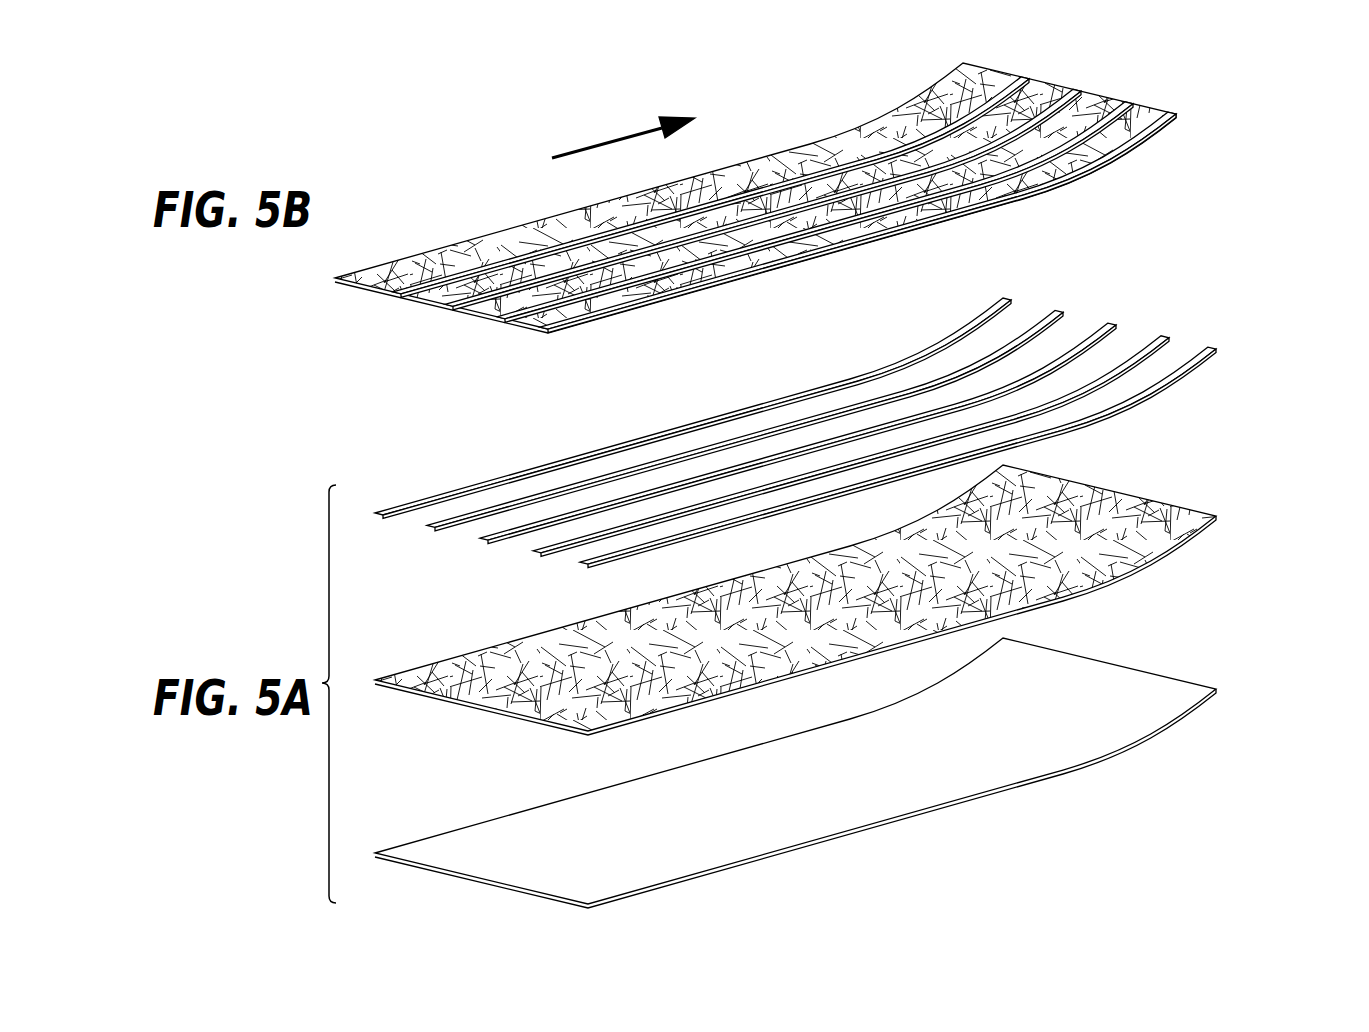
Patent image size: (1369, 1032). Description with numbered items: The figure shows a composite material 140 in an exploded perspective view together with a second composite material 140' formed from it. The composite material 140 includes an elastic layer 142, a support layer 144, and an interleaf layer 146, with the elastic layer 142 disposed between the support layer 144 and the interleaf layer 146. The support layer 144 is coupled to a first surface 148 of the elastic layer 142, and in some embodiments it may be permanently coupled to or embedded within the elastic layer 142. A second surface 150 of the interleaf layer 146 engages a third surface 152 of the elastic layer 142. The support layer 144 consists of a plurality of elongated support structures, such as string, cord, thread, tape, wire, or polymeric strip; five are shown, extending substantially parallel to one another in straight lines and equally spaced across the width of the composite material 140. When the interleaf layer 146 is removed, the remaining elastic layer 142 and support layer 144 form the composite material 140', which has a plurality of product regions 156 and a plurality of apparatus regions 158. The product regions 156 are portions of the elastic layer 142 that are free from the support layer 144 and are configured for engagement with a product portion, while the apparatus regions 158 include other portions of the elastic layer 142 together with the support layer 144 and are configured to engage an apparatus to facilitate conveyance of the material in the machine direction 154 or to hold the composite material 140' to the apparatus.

In FIG. 5A, the composite material 140 is at (1282, 368).
In FIG. 5B, the composite material 140' is at (421, 124).
In FIG. 5B, the elastic layer 142 is at (975, 83).
In FIG. 5A, the elastic layer 142 is at (1083, 512).
In FIG. 5B, the support layer 144 is at (1115, 102).
In FIG. 5A, the support layer 144 is at (1152, 338).
In FIG. 5A, the interleaf layer 146 is at (1123, 695).
In FIG. 5A, the first surface 148 is at (810, 625).
In FIG. 5A, the second surface 150 is at (810, 798).
In FIG. 5A, the third surface 152 is at (1133, 572).
In FIG. 5B, the machine direction 154 is at (610, 140).
In FIG. 5B, the product regions 156 is at (733, 235).
In FIG. 5B, the apparatus regions 158 is at (558, 320).